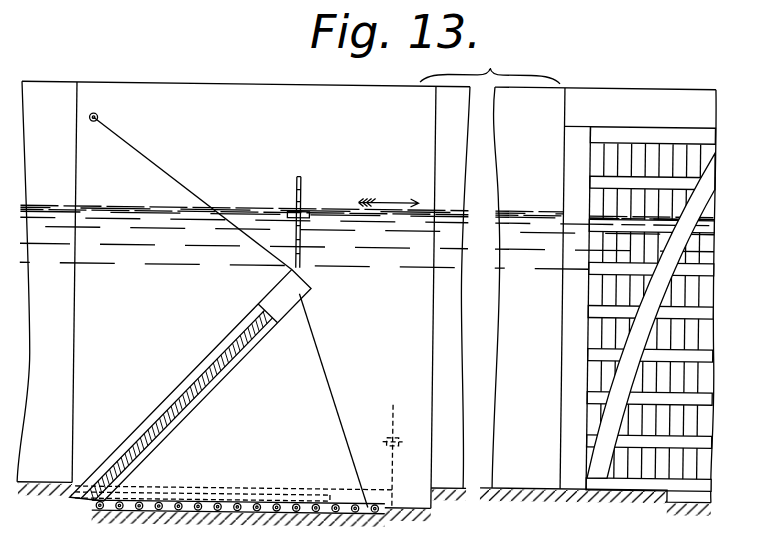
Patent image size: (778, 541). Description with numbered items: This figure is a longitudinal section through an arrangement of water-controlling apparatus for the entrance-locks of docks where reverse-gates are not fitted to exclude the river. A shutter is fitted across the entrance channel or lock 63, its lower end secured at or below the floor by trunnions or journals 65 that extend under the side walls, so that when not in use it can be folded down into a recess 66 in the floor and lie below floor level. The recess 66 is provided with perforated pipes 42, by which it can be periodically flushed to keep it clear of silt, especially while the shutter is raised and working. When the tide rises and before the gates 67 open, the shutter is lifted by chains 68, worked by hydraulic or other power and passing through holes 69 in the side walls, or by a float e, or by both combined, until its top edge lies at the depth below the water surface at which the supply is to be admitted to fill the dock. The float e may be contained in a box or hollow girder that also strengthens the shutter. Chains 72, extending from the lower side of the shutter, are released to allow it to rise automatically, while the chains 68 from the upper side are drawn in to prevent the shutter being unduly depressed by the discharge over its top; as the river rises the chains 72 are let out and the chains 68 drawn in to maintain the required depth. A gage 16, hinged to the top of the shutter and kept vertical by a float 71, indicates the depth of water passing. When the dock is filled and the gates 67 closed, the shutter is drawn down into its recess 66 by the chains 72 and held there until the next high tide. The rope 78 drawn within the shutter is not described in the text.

The gage 16 is at (298, 183).
The perforated pipes 42 is at (281, 502).
The entrance channel or lock 63 is at (451, 297).
The trunnions or journals 65 is at (80, 499).
The recess 66 is at (428, 491).
The gates 67 is at (637, 308).
The chains 68 is at (206, 172).
The holes 69 is at (100, 111).
The float 71 is at (298, 214).
The chains 72 is at (336, 391).
The rope 78 is at (241, 345).
The float e is at (278, 289).